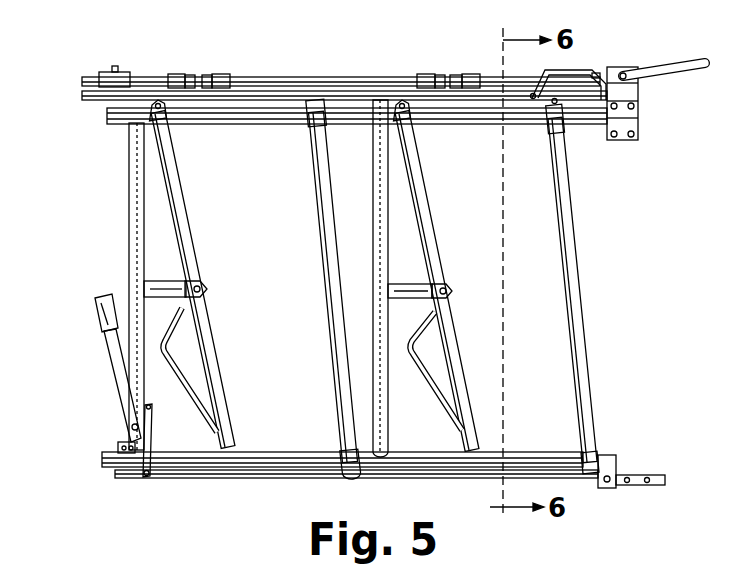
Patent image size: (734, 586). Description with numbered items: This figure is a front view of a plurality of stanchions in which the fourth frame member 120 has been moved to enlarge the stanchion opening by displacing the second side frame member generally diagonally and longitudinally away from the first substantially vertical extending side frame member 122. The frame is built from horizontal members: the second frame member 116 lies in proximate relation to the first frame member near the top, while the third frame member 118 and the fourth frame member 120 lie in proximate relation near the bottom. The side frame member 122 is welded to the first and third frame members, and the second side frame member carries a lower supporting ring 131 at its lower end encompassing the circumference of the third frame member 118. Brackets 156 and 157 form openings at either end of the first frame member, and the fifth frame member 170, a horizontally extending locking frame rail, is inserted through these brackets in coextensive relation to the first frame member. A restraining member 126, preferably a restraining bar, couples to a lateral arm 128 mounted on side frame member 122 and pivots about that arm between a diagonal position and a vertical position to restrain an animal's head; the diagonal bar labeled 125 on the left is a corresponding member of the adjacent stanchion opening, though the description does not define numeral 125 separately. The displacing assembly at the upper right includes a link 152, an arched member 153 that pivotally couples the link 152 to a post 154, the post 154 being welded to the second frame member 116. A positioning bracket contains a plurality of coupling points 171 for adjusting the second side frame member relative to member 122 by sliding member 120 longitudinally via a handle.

The second frame member 116 is at (82, 96).
The third frame member 118 is at (607, 456).
The fourth frame member 120 is at (652, 476).
The first substantially vertical extending side frame member 122 is at (373, 193).
The left diagonal strut 125 is at (188, 208).
The restraining member 126 is at (437, 208).
The lateral arm 128 is at (167, 282).
The lower supporting ring 131 is at (583, 462).
The link 152 is at (594, 73).
The arched member 153 is at (577, 67).
The post 154 is at (537, 98).
The bracket 156 is at (107, 110).
The bracket 157 is at (605, 106).
The fifth frame member 170 is at (305, 82).
The coupling points 171 is at (104, 436).